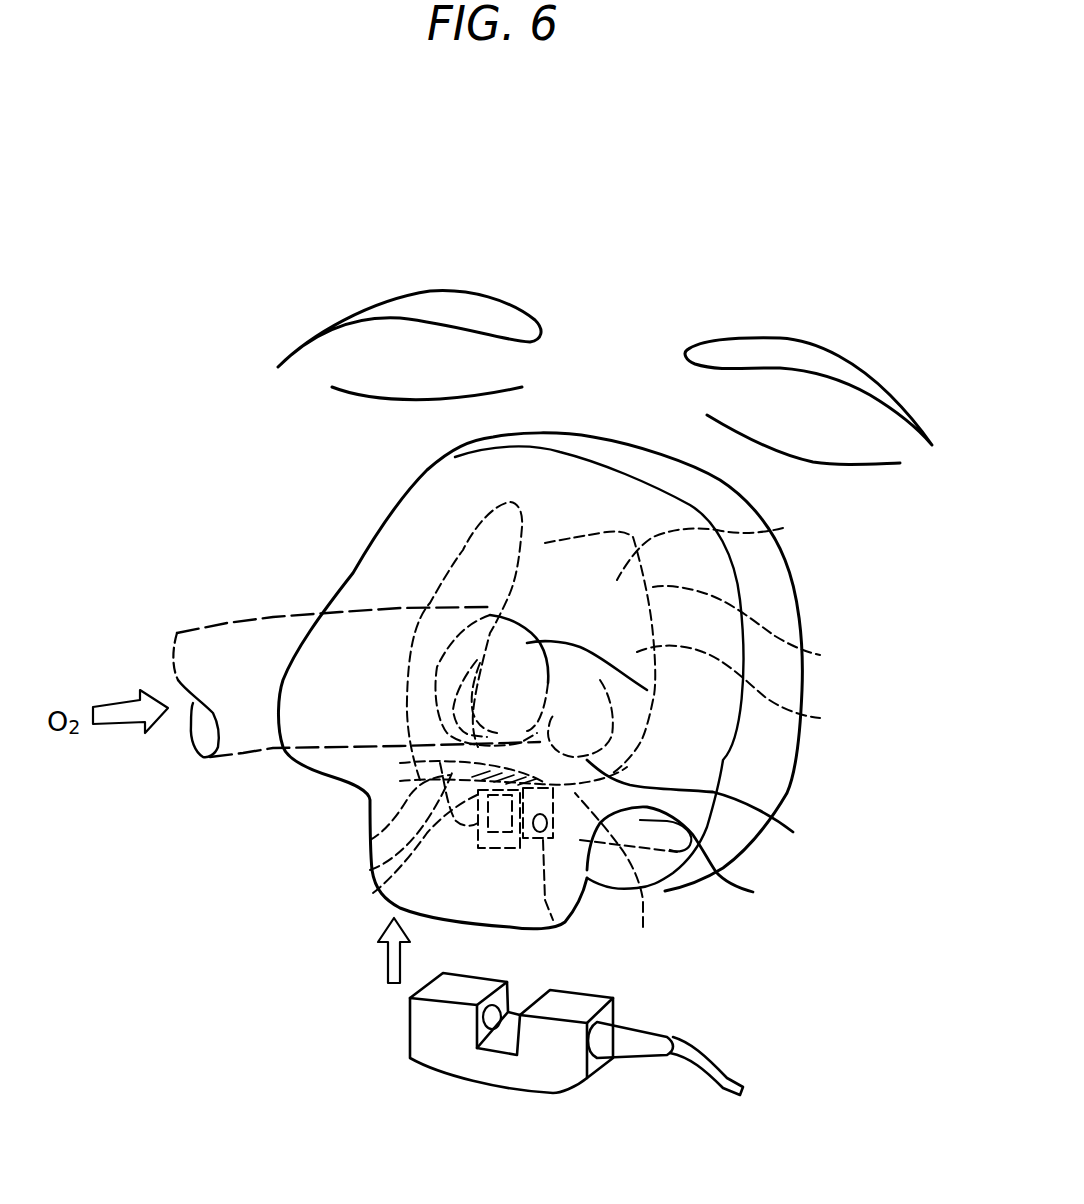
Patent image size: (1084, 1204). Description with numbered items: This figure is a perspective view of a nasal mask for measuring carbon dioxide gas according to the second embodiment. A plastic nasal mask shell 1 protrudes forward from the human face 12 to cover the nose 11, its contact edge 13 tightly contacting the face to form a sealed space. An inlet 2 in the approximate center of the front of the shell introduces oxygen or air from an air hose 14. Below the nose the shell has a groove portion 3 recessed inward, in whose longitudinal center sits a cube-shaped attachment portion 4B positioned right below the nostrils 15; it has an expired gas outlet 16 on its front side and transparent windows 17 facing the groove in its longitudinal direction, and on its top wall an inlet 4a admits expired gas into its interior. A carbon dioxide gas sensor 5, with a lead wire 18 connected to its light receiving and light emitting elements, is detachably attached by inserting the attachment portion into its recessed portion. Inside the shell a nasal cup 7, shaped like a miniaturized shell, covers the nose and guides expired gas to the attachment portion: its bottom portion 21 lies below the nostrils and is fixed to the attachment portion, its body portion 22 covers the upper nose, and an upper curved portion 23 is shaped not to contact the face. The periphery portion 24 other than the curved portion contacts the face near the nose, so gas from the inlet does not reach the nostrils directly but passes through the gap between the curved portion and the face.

The nasal mask shell 1 is at (363, 590).
The inlet 2 is at (647, 690).
The groove portion 3 is at (753, 892).
The inlet 4a is at (370, 870).
The attachment portion 4B is at (483, 850).
The carbon dioxide gas sensor 5 is at (428, 1038).
The nasal cup 7 is at (783, 528).
The nose 11 is at (523, 597).
The human face 12 is at (845, 615).
The contact edge 13 is at (787, 550).
The air hose 14 is at (245, 640).
The nostrils 15 is at (611, 878).
The expired gas outlet 16 is at (373, 893).
The transparent windows 17 is at (553, 920).
The lead wire 18 is at (707, 1052).
The bottom portion 21 is at (343, 853).
The body portion 22 is at (820, 718).
The curved portion 23 is at (545, 543).
The periphery portion 24 is at (820, 655).